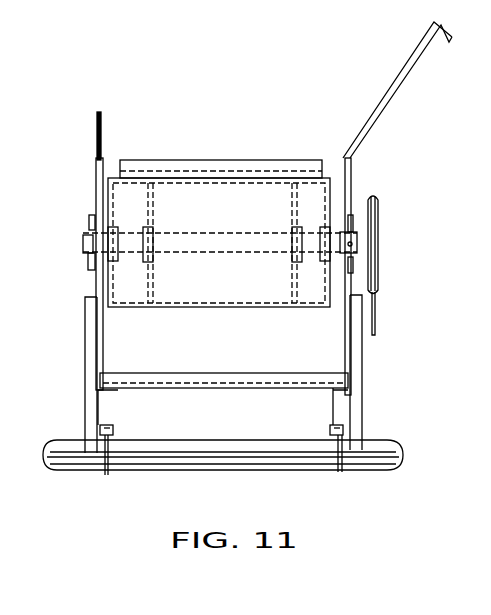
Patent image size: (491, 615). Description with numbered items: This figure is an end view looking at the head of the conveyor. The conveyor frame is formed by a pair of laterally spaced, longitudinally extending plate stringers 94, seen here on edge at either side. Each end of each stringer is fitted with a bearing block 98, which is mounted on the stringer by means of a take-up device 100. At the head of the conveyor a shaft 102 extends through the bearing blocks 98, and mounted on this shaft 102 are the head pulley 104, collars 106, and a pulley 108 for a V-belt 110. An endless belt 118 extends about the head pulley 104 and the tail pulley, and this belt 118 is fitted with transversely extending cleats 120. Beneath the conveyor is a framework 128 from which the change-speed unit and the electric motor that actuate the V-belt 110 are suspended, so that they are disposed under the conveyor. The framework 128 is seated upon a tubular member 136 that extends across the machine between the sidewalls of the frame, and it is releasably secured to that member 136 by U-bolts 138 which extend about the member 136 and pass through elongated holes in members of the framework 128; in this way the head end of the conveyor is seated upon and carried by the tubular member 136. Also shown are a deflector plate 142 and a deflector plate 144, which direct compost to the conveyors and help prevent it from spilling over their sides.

The plate stringers 94 is at (96, 192).
The bearing block 98 is at (97, 247).
The take-up device 100 is at (92, 218).
The shaft 102 is at (213, 255).
The head pulley 104 is at (218, 196).
The collars 106 is at (120, 232).
The pulley 108 is at (378, 218).
The V-belt 110 is at (375, 330).
The endless belt 118 is at (255, 170).
The cleats 120 is at (165, 162).
The framework 128 is at (235, 376).
The tubular member 136 is at (380, 446).
The U-bolts 138 is at (106, 472).
The deflector plate 142 is at (97, 127).
The deflector plate 144 is at (385, 108).